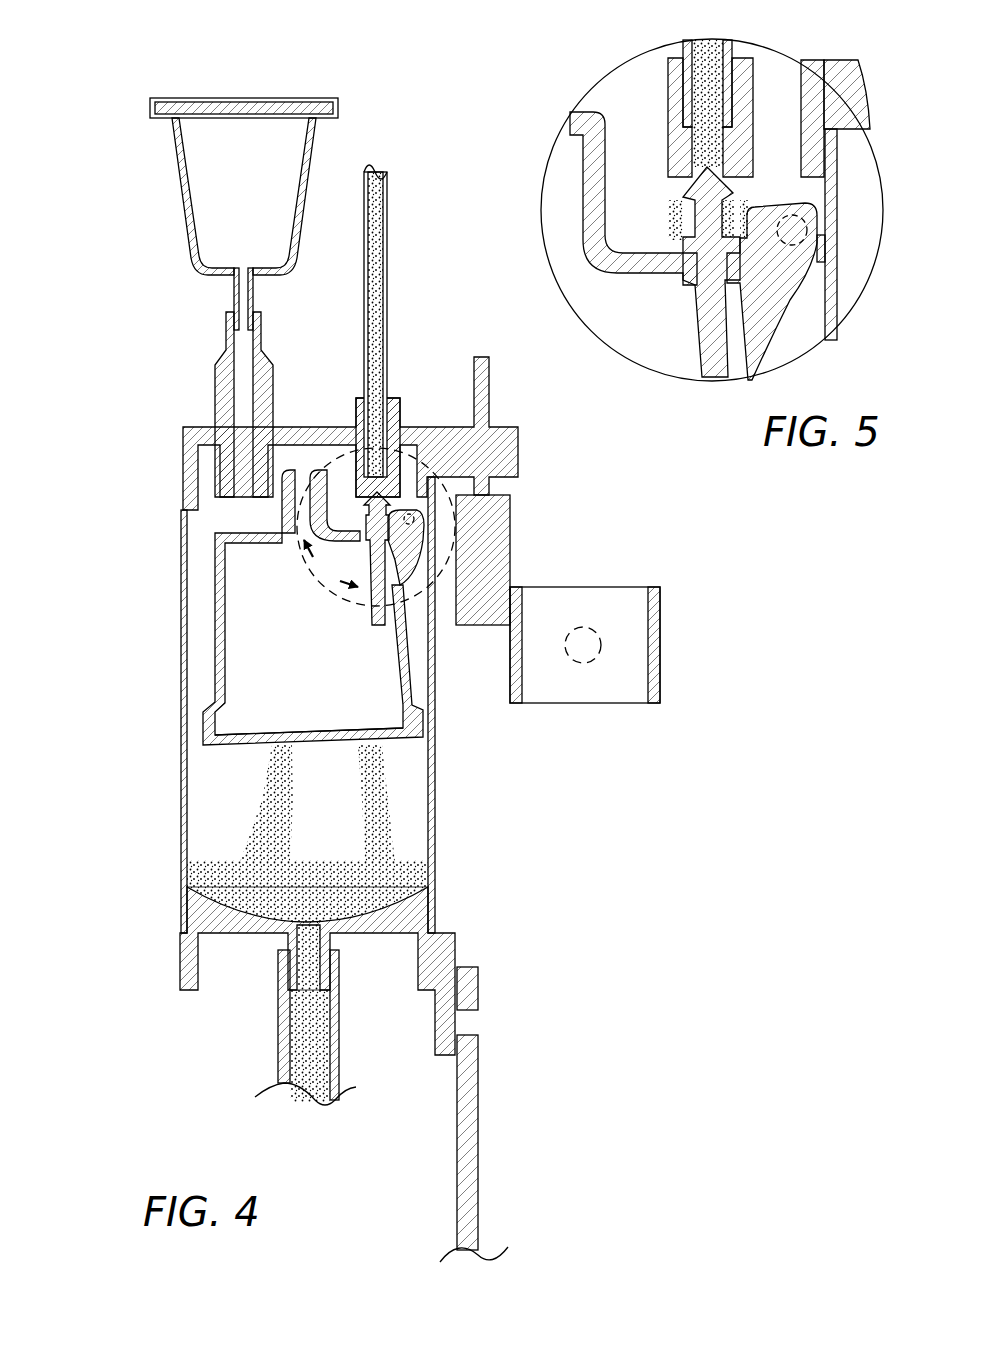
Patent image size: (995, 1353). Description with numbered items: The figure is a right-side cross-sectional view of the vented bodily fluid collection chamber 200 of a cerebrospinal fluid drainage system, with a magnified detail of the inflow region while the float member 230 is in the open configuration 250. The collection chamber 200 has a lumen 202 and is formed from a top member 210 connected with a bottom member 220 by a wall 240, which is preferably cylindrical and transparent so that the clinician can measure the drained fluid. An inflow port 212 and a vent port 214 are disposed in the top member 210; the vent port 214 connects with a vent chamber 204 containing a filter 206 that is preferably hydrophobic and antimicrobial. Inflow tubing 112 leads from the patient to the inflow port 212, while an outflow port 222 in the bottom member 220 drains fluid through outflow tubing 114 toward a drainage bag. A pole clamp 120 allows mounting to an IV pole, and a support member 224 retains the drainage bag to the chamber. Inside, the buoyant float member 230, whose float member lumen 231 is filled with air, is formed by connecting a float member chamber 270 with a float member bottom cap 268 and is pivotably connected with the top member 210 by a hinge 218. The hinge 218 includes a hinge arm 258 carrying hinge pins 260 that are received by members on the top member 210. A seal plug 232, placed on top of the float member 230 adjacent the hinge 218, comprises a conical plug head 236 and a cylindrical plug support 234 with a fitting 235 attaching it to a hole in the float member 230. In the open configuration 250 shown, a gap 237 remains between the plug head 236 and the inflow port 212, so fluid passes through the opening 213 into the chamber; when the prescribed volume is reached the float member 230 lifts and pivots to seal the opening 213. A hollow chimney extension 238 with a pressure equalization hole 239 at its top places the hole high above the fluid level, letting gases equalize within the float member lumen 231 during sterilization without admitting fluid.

In FIG. 4, the inflow tubing 112 is at (388, 247).
In FIG. 5, the inflow tubing 112 is at (737, 58).
In FIG. 4, the outflow tubing 114 is at (285, 1043).
In FIG. 4, the pole clamp 120 is at (660, 647).
In FIG. 4, the collection chamber 200 is at (160, 730).
In FIG. 4, the lumen 202 is at (195, 530).
In FIG. 4, the vent chamber 204 is at (197, 154).
In FIG. 4, the filter 206 is at (290, 107).
In FIG. 4, the top member 210 is at (431, 426).
In FIG. 5, the top member 210 is at (838, 113).
In FIG. 4, the inflow port 212 is at (395, 395).
In FIG. 5, the inflow port 212 is at (672, 56).
In FIG. 5, the opening 213 is at (717, 162).
In FIG. 4, the vent port 214 is at (227, 385).
In FIG. 4, the hinge 218 is at (455, 512).
In FIG. 5, the hinge 218 is at (818, 238).
In FIG. 4, the bottom member 220 is at (410, 913).
In FIG. 4, the outflow port 222 is at (287, 942).
In FIG. 4, the support member 224 is at (470, 1128).
In FIG. 4, the float member 230 is at (216, 563).
In FIG. 4, the float member lumen 231 is at (243, 625).
In FIG. 4, the seal plug 232 is at (370, 507).
In FIG. 5, the seal plug 232 is at (686, 303).
In FIG. 5, the plug support 234 is at (693, 210).
In FIG. 5, the fitting 235 is at (668, 246).
In FIG. 5, the plug head 236 is at (697, 183).
In FIG. 5, the gap 237 is at (700, 177).
In FIG. 4, the hollow chimney extension 238 is at (318, 470).
In FIG. 5, the hollow chimney extension 238 is at (582, 122).
In FIG. 4, the pressure equalization hole 239 is at (303, 470).
In FIG. 4, the wall 240 is at (435, 838).
In FIG. 5, the wall 240 is at (837, 290).
In FIG. 4, the open configuration 250 is at (155, 405).
In FIG. 5, the open configuration 250 is at (618, 46).
In FIG. 4, the hinge arm 258 is at (406, 547).
In FIG. 5, the hinge arm 258 is at (757, 250).
In FIG. 5, the hinge pin 260 is at (795, 230).
In FIG. 4, the float member bottom cap 268 is at (243, 744).
In FIG. 4, the float member chamber 270 is at (405, 660).